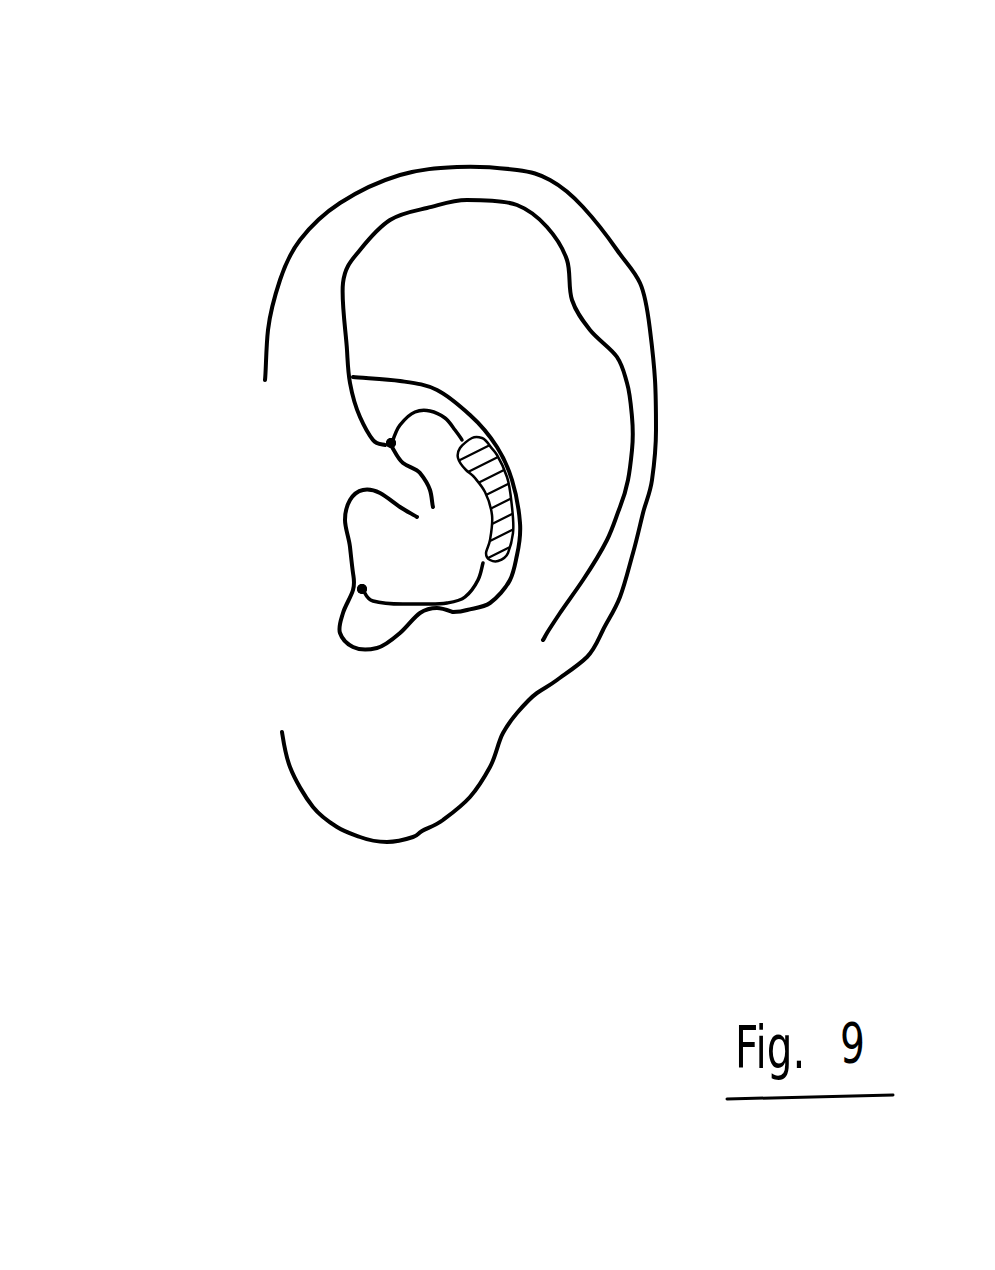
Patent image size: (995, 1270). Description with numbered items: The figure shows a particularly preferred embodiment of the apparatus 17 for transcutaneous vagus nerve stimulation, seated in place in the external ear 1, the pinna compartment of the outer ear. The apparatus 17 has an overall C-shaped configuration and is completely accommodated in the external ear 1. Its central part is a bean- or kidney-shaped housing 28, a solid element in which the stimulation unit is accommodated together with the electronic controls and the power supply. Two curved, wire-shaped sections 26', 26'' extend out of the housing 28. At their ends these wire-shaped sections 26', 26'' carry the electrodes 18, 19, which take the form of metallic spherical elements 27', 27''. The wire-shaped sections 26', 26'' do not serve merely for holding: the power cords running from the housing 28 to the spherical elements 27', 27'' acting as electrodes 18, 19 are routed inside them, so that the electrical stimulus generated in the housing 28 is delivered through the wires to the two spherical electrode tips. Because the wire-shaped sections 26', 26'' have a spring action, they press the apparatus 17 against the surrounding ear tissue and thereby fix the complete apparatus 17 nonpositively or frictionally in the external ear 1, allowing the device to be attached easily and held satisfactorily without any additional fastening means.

The external ear 1 is at (313, 188).
The apparatus 17 is at (577, 488).
The electrode 18 is at (360, 590).
The electrode 19 is at (387, 443).
The wire-shaped section 26' is at (591, 604).
The wire-shaped section 26'' is at (600, 418).
The metallic spherical element 27' is at (250, 576).
The metallic spherical element 27'' is at (264, 442).
The housing 28 is at (500, 473).